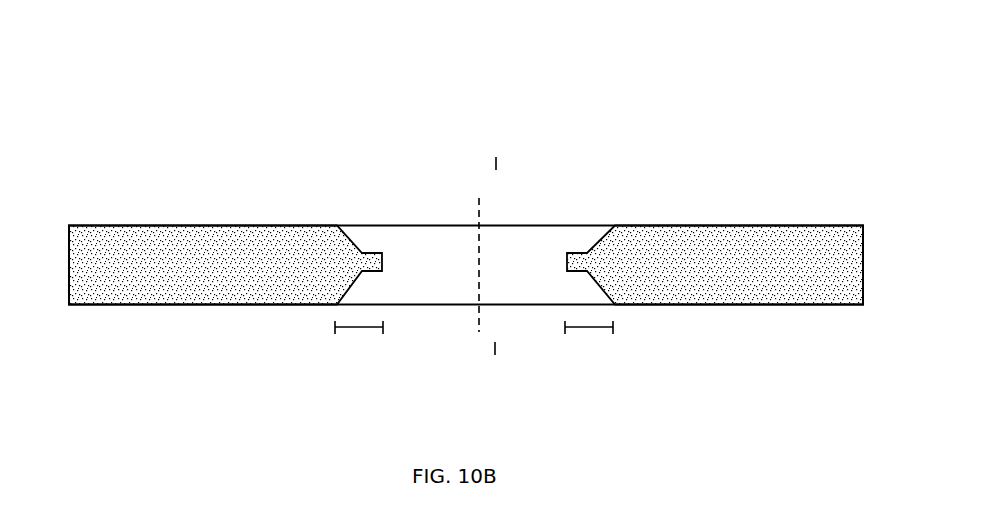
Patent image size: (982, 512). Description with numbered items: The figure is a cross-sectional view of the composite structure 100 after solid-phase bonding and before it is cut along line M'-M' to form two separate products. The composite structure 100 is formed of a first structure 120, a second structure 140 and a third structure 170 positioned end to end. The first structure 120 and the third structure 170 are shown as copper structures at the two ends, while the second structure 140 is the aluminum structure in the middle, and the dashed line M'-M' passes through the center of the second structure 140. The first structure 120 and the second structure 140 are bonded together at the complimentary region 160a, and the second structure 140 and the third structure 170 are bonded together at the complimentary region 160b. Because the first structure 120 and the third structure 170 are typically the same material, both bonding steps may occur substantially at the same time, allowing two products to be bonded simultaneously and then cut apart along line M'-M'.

The composite structure 100 is at (560, 93).
The first structure 120 is at (127, 238).
The second structure 140 is at (389, 227).
The third structure 170 is at (707, 227).
The complimentary region 160a is at (362, 333).
The complimentary region 160b is at (590, 333).